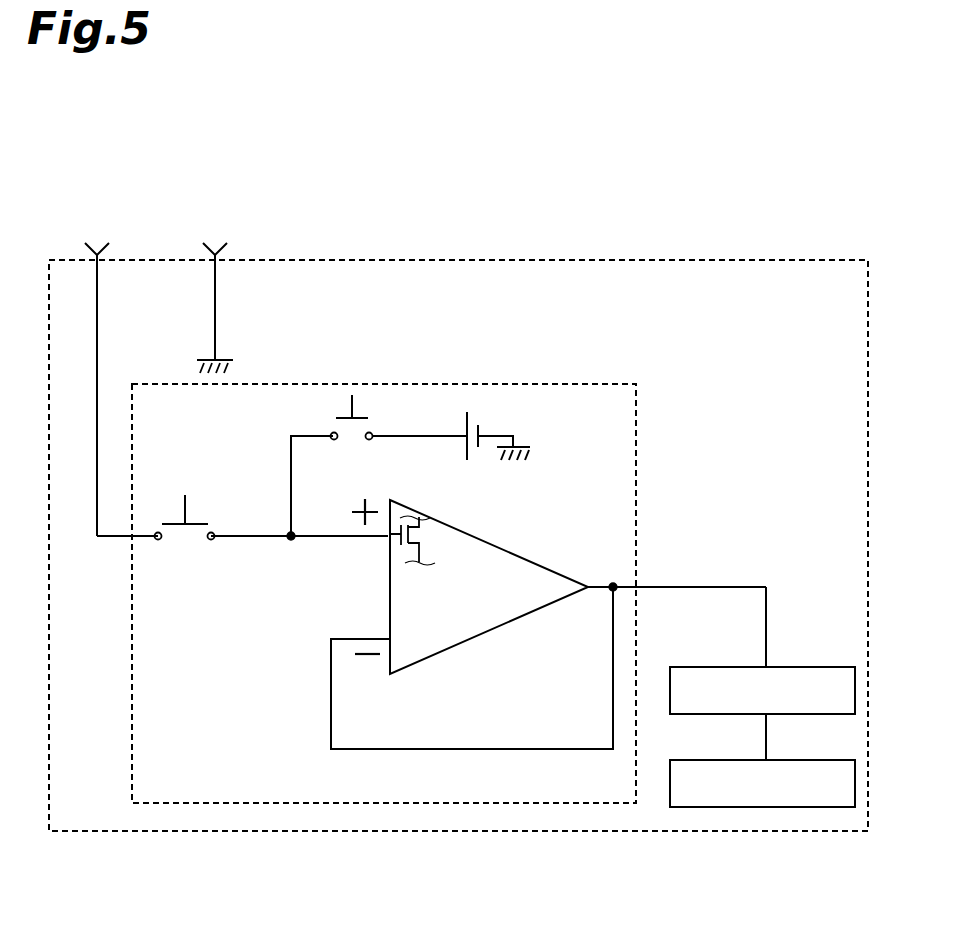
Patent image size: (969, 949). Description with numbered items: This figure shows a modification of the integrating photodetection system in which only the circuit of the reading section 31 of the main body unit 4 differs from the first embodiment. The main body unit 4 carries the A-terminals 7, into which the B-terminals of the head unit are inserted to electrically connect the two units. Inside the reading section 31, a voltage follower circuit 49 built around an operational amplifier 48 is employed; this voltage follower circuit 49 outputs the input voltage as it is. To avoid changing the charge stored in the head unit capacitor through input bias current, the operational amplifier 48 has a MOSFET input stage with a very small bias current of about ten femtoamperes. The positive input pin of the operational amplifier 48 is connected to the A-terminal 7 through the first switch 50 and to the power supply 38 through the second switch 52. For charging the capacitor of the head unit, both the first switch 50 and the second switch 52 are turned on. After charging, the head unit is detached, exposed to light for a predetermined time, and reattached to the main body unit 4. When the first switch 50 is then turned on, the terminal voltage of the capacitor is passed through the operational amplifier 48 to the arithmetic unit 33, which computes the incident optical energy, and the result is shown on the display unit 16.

The main body unit 4 is at (448, 260).
The A-terminals 7 is at (228, 222).
The display unit 16 is at (800, 760).
The signal reading section 31 is at (636, 425).
The arithmetic unit 33 is at (798, 667).
The power supply 38 is at (472, 405).
The operational amplifier 48 is at (502, 558).
The voltage follower circuit 49 is at (556, 765).
The first switch 50 is at (195, 507).
The second switch 52 is at (360, 400).